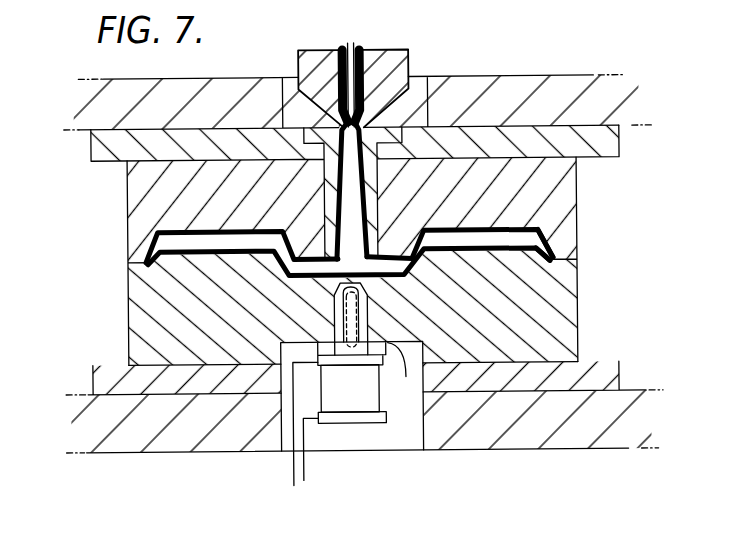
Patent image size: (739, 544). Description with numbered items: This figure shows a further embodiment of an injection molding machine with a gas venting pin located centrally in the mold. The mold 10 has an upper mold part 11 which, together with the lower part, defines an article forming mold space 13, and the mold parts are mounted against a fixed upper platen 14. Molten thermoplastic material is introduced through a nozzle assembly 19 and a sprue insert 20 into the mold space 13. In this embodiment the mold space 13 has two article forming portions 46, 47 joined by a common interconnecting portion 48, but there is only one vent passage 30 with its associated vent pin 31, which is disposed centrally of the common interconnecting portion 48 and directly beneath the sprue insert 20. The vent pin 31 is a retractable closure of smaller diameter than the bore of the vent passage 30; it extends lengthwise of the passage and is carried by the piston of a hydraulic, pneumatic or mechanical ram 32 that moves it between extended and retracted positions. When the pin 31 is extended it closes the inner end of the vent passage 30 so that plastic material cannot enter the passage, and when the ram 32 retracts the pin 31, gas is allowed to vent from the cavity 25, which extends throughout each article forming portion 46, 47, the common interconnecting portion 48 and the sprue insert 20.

The mold 10 is at (347, 308).
The upper mold part 11 is at (146, 176).
The article forming mold space 13 is at (552, 244).
The fixed upper platen 14 is at (87, 93).
The nozzle assembly 19 is at (302, 59).
The sprue insert 20 is at (422, 77).
The cavity 25 is at (165, 245).
The vent passage 30 is at (367, 318).
The vent pin 31 is at (358, 308).
The ram 32 is at (353, 405).
The first article forming portion 46 is at (192, 233).
The second article forming portion 47 is at (539, 230).
The common interconnecting portion 48 is at (303, 283).